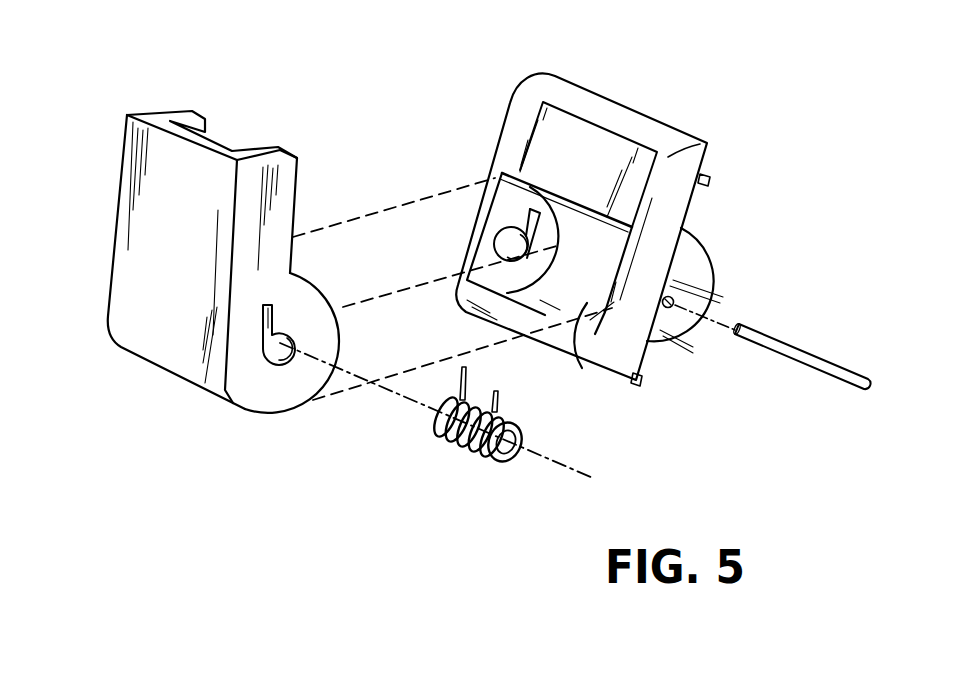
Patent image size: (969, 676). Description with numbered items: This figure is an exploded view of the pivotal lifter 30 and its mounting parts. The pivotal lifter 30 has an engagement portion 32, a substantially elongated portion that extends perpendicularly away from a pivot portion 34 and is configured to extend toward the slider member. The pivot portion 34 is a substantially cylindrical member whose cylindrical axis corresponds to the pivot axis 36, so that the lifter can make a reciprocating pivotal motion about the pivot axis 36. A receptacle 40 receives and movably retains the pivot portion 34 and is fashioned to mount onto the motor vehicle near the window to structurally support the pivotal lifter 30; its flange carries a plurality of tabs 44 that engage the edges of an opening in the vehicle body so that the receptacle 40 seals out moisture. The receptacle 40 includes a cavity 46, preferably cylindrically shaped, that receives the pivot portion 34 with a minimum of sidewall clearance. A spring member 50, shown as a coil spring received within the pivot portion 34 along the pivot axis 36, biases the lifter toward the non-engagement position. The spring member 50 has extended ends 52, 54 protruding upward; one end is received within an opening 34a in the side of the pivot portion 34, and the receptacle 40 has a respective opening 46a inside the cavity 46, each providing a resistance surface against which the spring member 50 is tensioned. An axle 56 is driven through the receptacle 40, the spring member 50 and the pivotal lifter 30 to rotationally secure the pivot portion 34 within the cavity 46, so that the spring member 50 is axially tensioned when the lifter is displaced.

The pivotal lifter 30 is at (216, 311).
The engagement portion 32 is at (118, 217).
The pivot portion 34 is at (309, 373).
The opening 34a is at (298, 327).
The pivot axis 36 is at (543, 455).
The receptacle 40 is at (608, 243).
The tabs 44 is at (712, 178).
The cavity 46 is at (533, 317).
The opening 46a is at (503, 228).
The spring member 50 is at (500, 418).
The extended end 52 is at (500, 403).
The extended end 54 is at (470, 372).
The axle 56 is at (803, 356).